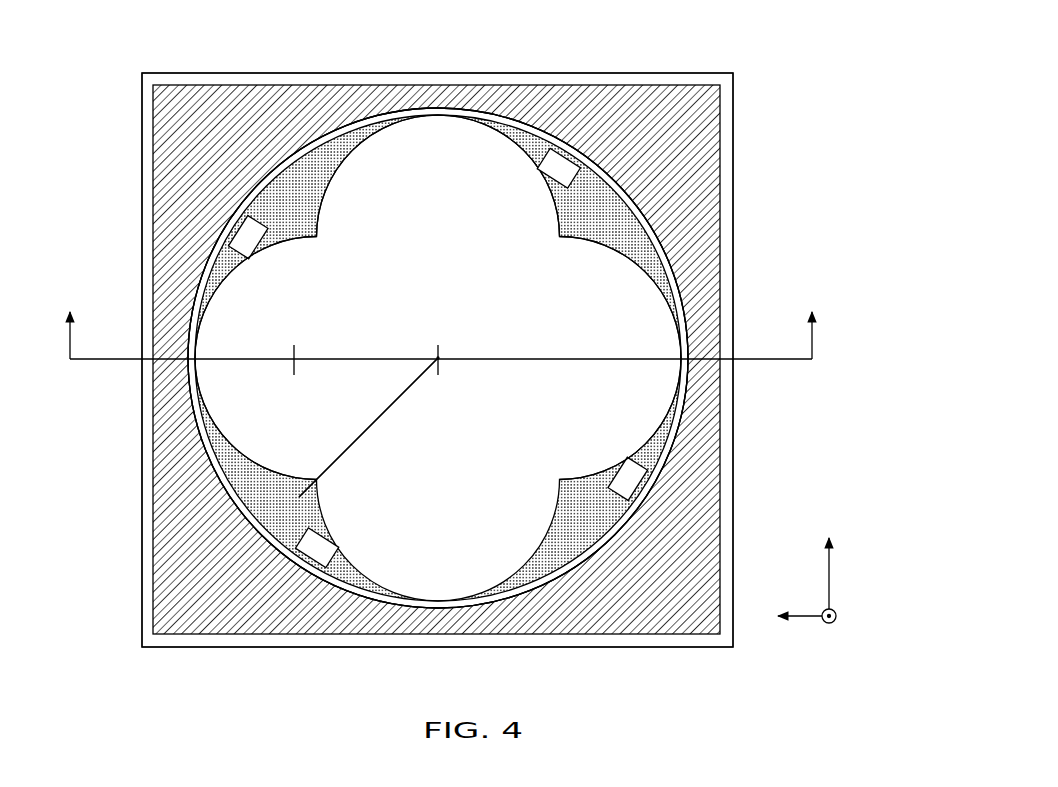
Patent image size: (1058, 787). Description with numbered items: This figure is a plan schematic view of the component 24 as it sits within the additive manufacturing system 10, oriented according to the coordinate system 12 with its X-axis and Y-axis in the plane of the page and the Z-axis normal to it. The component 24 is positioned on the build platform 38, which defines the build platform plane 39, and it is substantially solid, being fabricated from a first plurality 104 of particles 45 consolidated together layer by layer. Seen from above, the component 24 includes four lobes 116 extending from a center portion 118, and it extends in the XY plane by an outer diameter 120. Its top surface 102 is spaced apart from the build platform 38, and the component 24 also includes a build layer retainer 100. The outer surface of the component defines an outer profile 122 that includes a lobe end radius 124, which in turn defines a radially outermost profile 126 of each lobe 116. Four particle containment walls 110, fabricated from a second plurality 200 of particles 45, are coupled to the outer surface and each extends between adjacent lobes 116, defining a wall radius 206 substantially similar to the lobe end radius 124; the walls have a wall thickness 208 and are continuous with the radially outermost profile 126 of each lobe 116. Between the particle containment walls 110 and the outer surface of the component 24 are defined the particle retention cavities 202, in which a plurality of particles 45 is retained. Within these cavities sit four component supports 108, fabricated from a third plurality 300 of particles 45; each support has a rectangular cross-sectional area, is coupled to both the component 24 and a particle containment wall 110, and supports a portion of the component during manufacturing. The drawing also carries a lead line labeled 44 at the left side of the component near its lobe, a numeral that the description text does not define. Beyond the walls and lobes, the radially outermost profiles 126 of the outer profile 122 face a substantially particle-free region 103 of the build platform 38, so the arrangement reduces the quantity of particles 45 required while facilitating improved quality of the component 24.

The additive manufacturing system 10 is at (752, 146).
The coordinate system 12 is at (862, 573).
The component 24 is at (587, 393).
The build platform 38 is at (697, 272).
The build platform plane 39 is at (132, 462).
The inner surface 44 is at (220, 390).
The particles 45 is at (247, 240).
The build layer retainer 100 is at (328, 75).
The top surface 102 is at (395, 165).
The substantially particle-free region 103 is at (175, 168).
The first plurality of particles 104 is at (513, 577).
The component supports 108 is at (260, 557).
The particle containment walls 110 is at (223, 500).
The lobes 116 is at (495, 187).
The center portion 118 is at (460, 340).
The outer diameter 120 is at (362, 435).
The outer profile 122 is at (245, 173).
The lobe end radius 124 is at (263, 353).
The radially outermost profile 126 is at (440, 98).
The second plurality of particles 200 is at (595, 160).
The particle retention cavities 202 is at (277, 547).
The wall radius 206 is at (368, 427).
The wall thickness 208 is at (643, 225).
The third plurality of particles 300 is at (240, 223).